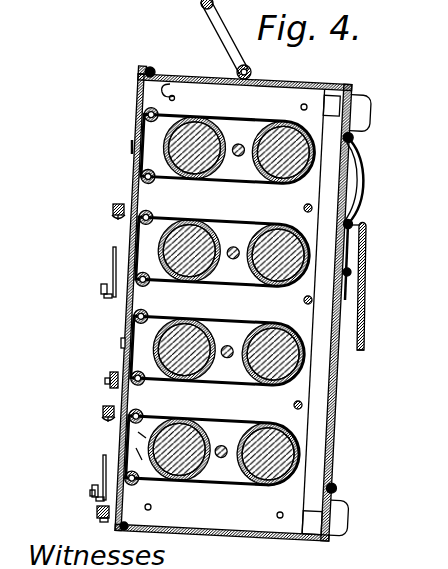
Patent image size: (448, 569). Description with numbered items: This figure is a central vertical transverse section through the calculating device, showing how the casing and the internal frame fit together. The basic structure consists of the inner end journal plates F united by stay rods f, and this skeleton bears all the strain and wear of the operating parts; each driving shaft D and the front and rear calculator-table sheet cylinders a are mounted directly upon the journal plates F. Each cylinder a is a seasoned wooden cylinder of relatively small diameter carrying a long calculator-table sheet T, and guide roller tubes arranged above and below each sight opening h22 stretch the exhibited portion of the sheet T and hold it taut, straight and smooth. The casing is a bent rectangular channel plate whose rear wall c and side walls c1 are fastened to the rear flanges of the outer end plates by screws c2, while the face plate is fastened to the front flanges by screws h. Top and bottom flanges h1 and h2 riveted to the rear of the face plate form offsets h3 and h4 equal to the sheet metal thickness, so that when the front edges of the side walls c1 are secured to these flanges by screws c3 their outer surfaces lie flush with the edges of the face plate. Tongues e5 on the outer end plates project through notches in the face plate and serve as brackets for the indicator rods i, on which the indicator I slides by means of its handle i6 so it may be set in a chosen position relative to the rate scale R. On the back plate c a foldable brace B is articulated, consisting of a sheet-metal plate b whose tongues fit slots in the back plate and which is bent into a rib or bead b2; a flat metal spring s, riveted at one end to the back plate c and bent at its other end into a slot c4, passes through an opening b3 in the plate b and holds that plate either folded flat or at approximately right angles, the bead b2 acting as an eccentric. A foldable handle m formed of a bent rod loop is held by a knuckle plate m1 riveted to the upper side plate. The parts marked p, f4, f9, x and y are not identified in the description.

The calculator-table sheet cylinder a is at (231, 300).
The calculator-table sheet T is at (252, 124).
The driving shaft D is at (238, 157).
The side wall c1 is at (336, 86).
The rear wall c is at (333, 474).
The screw c2 is at (338, 490).
The screw c3 is at (152, 66).
The slot c4 is at (358, 137).
The cap p is at (367, 311).
The rate scale R is at (112, 158).
The inner end journal plate F is at (235, 311).
The foldable handle m is at (225, 37).
The knuckle plate m1 is at (258, 73).
The top flange h1 is at (172, 84).
The offset h3 is at (143, 68).
The sight opening h22 is at (133, 147).
The screw h is at (110, 381).
The offset h4 is at (108, 535).
The bottom flange h2 is at (130, 522).
The tongue e5 is at (114, 206).
The indicator rod i is at (110, 212).
The handle i6 is at (92, 494).
The indicator I is at (110, 265).
The flat metal spring s is at (356, 220).
The rib or bead b2 is at (356, 222).
The opening b3 is at (370, 227).
The foldable brace B is at (370, 286).
The plate b is at (364, 339).
The stay rod f is at (302, 406).
The screw f4 is at (299, 298).
The screw f9 is at (299, 207).
The point x is at (142, 437).
The point y is at (135, 456).